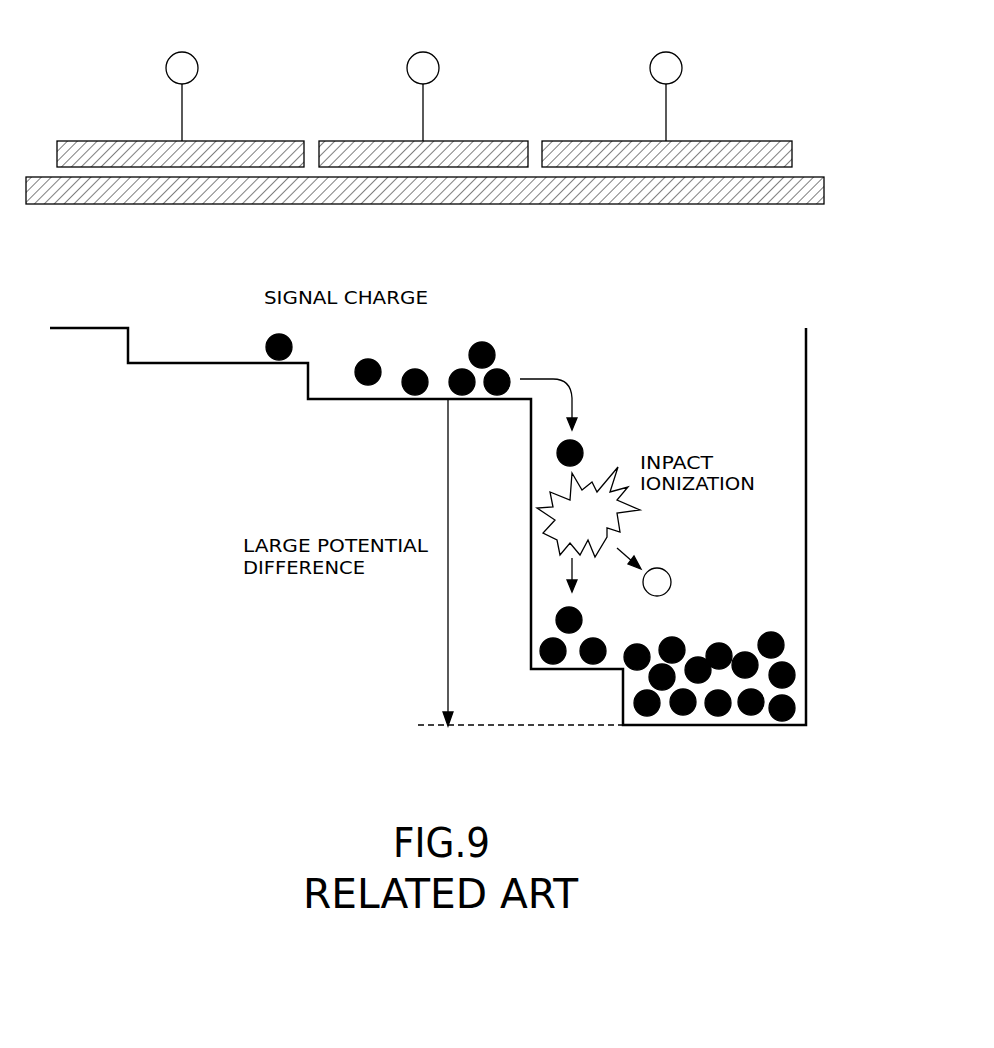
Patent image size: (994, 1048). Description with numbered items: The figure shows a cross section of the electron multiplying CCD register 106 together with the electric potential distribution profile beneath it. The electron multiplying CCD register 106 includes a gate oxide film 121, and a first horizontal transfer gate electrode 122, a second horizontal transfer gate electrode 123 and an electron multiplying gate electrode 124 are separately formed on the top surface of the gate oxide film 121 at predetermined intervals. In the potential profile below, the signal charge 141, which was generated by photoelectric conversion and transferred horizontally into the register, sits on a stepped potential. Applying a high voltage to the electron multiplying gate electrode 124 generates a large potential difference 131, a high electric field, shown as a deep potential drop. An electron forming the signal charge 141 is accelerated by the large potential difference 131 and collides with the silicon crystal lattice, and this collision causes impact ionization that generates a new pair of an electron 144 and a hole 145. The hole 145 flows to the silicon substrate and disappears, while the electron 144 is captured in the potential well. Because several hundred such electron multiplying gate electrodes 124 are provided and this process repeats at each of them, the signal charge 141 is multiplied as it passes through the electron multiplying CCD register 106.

The electron multiplying CCD register 106 is at (448, 138).
The gate oxide film 121 is at (807, 177).
The first horizontal transfer gate electrode 122 is at (192, 53).
The second horizontal transfer gate electrode 123 is at (433, 53).
The electron multiplying gate electrode 124 is at (667, 91).
The large potential difference 131 is at (448, 528).
The signal charge 141 is at (492, 343).
The electron 144 is at (557, 625).
The hole 145 is at (668, 570).